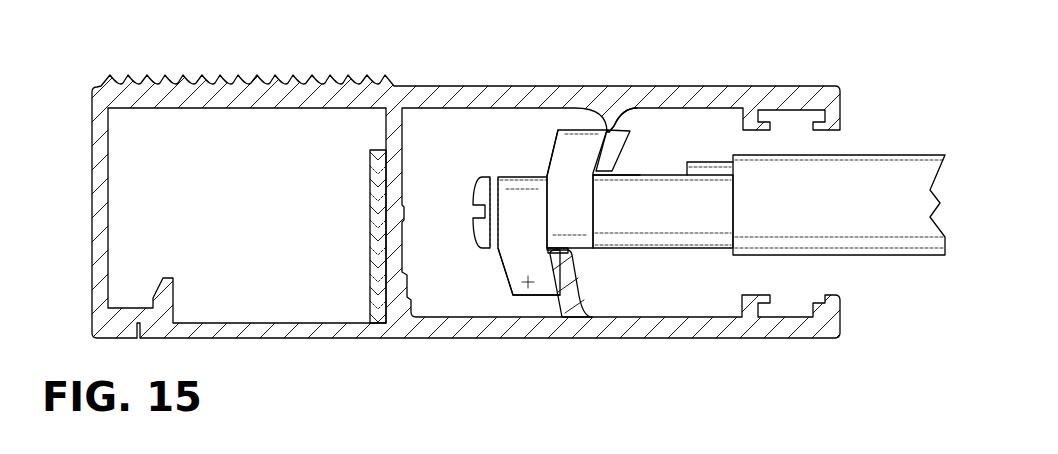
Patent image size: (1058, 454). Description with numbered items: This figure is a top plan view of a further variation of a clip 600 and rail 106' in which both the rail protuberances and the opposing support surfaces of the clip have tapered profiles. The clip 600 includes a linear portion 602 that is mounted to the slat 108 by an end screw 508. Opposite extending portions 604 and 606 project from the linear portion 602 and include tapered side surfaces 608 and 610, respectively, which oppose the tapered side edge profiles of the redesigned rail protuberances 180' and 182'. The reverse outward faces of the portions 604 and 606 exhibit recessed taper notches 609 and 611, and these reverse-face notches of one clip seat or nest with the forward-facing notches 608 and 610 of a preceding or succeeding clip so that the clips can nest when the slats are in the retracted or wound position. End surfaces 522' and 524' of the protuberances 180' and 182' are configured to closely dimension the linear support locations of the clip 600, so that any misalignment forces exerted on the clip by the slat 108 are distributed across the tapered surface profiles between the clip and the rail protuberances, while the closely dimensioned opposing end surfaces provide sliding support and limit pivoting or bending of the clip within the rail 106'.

The rail 106' is at (529, 250).
The slat 108 is at (897, 243).
The rail protuberance 180' is at (651, 129).
The rail protuberance 182' is at (605, 283).
The end screw 508 is at (476, 186).
The end surface 522' is at (634, 158).
The end surface 524' is at (594, 262).
The clip 600 is at (670, 255).
The linear portion 602 is at (690, 190).
The extending portion 604 is at (572, 162).
The extending portion 606 is at (522, 297).
The tapered side surface 608 is at (598, 160).
The recessed taper notch 609 is at (549, 160).
The tapered side surface 610 is at (560, 296).
The recessed taper notch 611 is at (508, 278).